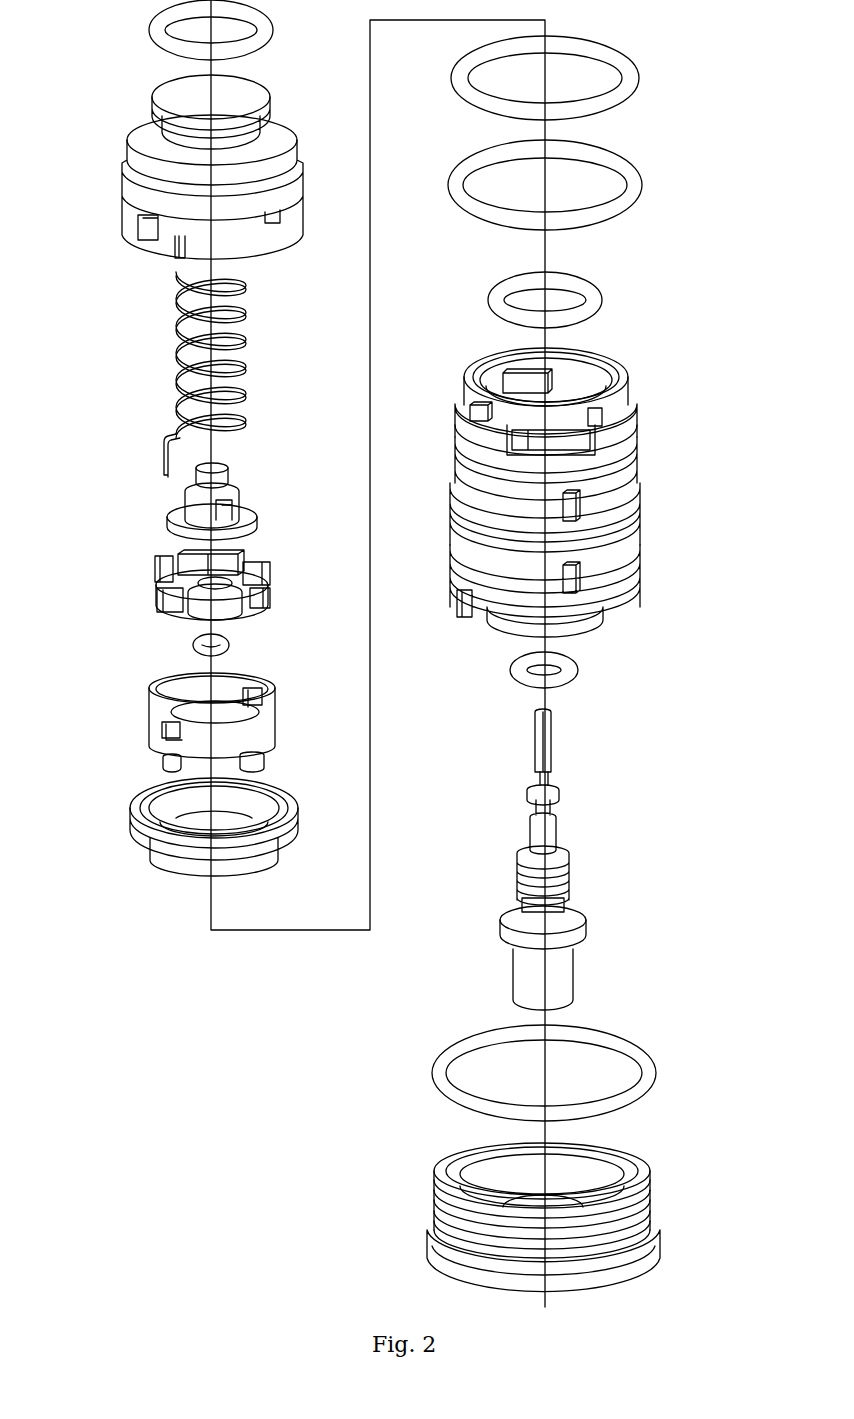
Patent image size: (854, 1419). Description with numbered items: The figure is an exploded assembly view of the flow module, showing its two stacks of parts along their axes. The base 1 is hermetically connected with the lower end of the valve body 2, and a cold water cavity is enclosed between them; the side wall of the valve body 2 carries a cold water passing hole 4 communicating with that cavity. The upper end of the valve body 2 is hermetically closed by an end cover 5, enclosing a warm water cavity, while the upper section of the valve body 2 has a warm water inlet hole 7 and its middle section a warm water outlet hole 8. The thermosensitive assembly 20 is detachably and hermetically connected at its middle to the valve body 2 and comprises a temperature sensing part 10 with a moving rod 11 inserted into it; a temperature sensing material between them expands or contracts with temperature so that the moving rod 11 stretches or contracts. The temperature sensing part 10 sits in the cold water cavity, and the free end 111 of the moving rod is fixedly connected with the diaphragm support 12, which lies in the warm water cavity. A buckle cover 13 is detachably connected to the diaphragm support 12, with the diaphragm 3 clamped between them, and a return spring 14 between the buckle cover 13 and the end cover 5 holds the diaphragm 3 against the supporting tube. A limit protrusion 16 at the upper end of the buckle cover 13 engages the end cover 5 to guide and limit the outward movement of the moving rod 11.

The base 1 is at (655, 1185).
The valve body 2 is at (636, 500).
The diaphragm 3 is at (130, 825).
The cold water passing hole 4 is at (633, 553).
The end cover 5 is at (125, 180).
The warm water inlet hole 7 is at (455, 415).
The warm water outlet hole 8 is at (633, 466).
The temperature sensing part 10 is at (575, 957).
The moving rod 11 is at (615, 785).
The diaphragm support 12 is at (150, 716).
The buckle cover 13 is at (168, 512).
The return spring 14 is at (175, 346).
The limit protrusion 16 is at (150, 93).
The thermosensitive assembly 20 is at (607, 834).
The free end of the moving rod 111 is at (552, 712).